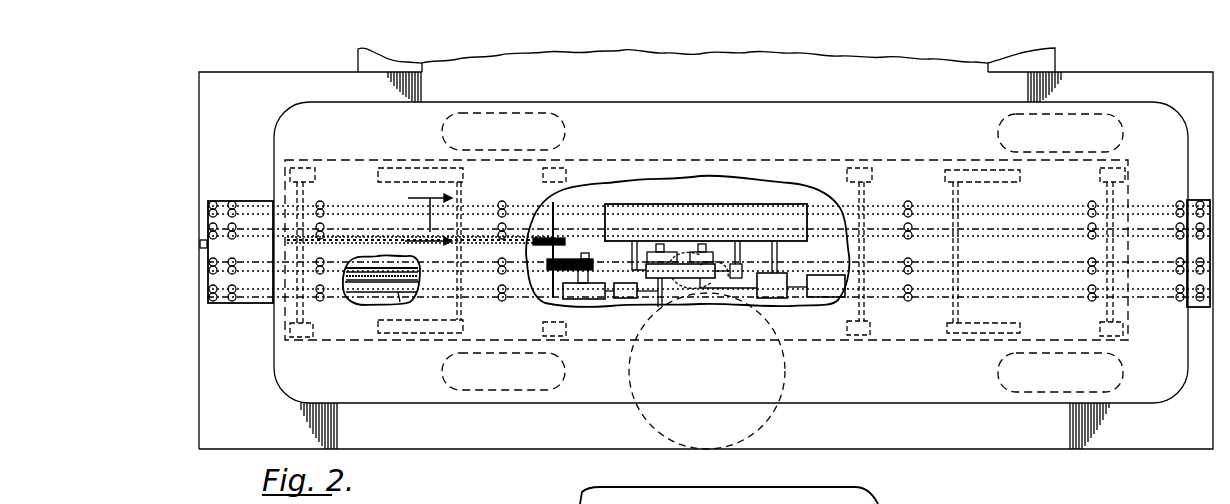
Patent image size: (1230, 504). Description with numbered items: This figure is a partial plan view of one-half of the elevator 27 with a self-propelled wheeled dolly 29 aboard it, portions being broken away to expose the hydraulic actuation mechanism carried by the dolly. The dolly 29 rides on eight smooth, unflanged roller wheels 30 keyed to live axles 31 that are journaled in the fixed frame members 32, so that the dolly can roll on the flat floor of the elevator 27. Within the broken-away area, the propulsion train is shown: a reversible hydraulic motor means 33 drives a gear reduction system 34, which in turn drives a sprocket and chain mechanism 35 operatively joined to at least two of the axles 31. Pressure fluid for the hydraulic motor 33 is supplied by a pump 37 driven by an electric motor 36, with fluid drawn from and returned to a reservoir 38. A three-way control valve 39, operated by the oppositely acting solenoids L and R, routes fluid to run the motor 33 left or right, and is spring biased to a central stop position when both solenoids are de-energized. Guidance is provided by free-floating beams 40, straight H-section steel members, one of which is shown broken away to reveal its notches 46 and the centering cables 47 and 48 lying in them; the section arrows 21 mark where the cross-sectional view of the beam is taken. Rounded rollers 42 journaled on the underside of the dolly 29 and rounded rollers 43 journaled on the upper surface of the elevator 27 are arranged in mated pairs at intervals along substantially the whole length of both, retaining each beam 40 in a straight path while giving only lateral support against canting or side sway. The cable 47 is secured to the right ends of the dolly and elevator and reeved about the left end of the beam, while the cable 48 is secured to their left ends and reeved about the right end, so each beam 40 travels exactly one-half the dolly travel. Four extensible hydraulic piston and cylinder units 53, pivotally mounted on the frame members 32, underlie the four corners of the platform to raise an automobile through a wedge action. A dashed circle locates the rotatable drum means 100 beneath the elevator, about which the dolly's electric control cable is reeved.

The section line / viewing direction 21 is at (428, 220).
The elevator 27 is at (199, 100).
The self-propelled wheeled dolly 29 is at (207, 247).
The roller wheels 30 is at (315, 178).
The live axles 31 is at (304, 190).
The fixed frame members 32 is at (648, 160).
The hydraulic motor means 33 is at (626, 298).
The gear reduction system 34 is at (580, 299).
The sprocket and chain mechanism 35 is at (564, 261).
The electric motor 36 is at (823, 297).
The pump 37 is at (774, 298).
The reservoir 38 is at (672, 204).
The three-way control valve 39 is at (697, 250).
The free-floating beam 40 is at (256, 201).
The rollers 42 is at (208, 232).
The rollers 43 is at (232, 201).
The notch 46 is at (358, 270).
The centering cable 47 is at (366, 277).
The centering cable 48 is at (374, 281).
The hydraulic piston and cylinder unit 53 is at (393, 176).
The rotatable drum means 100 is at (648, 394).